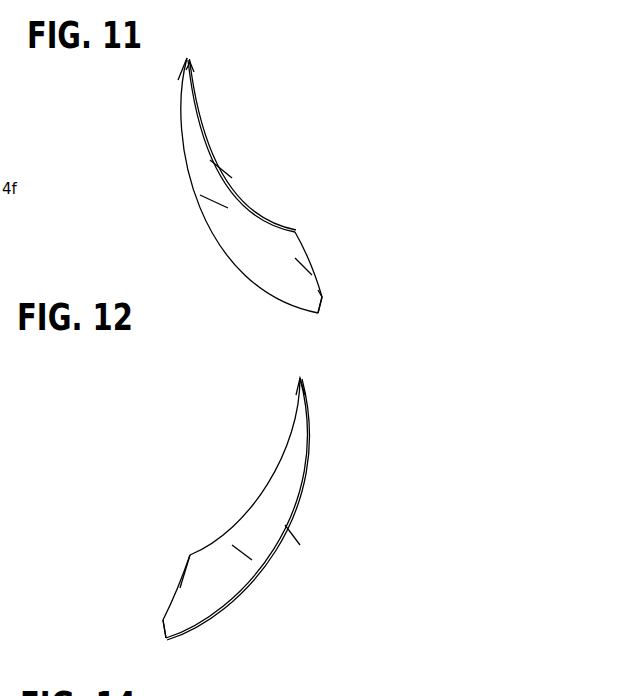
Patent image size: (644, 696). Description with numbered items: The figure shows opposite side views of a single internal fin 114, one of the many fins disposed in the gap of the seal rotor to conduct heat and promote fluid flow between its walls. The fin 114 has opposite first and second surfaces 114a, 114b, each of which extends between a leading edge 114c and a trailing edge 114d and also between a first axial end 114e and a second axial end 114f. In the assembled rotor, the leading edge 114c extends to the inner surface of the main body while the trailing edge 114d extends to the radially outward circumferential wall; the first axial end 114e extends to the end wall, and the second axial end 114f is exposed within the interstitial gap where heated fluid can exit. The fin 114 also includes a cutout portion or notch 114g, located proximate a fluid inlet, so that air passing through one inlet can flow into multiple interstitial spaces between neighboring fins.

In FIG. 11, the internal fin 114 is at (365, 297).
In FIG. 12, the internal fin 114 is at (275, 632).
In FIG. 11, the first surface 114a is at (222, 168).
In FIG. 12, the first surface 114a is at (242, 552).
In FIG. 11, the second surface 114b is at (225, 203).
In FIG. 12, the second surface 114b is at (292, 535).
In FIG. 11, the leading edge 114c is at (192, 77).
In FIG. 11, the trailing edge 114d is at (257, 212).
In FIG. 12, the trailing edge 114d is at (228, 613).
In FIG. 11, the first axial end 114e is at (306, 267).
In FIG. 12, the first axial end 114e is at (300, 380).
In FIG. 11, the second axial end 114f is at (183, 67).
In FIG. 12, the second axial end 114f is at (180, 588).
In FIG. 11, the notch 114g is at (327, 305).
In FIG. 12, the notch 114g is at (163, 632).